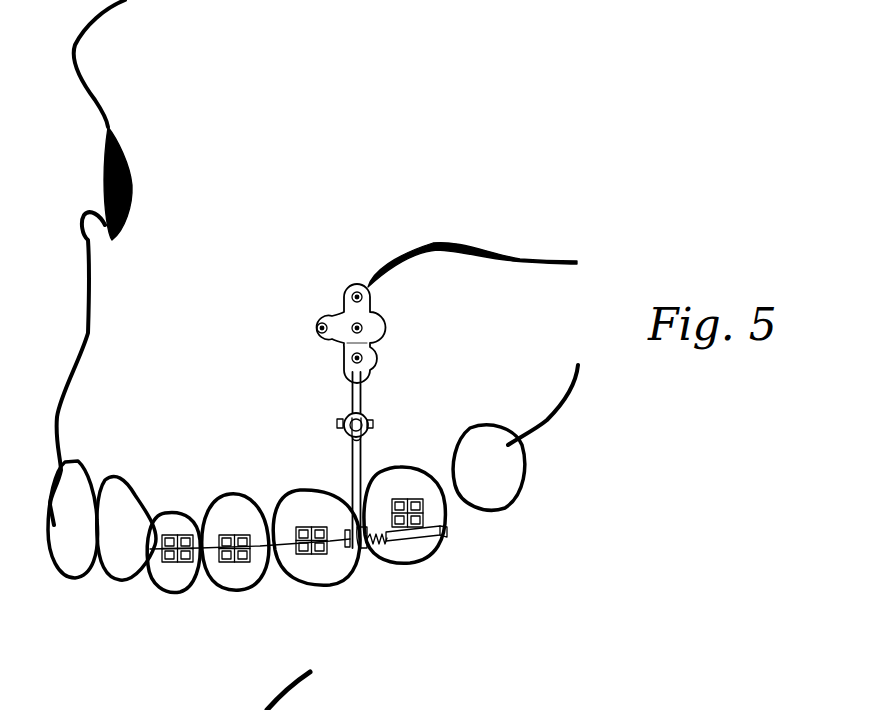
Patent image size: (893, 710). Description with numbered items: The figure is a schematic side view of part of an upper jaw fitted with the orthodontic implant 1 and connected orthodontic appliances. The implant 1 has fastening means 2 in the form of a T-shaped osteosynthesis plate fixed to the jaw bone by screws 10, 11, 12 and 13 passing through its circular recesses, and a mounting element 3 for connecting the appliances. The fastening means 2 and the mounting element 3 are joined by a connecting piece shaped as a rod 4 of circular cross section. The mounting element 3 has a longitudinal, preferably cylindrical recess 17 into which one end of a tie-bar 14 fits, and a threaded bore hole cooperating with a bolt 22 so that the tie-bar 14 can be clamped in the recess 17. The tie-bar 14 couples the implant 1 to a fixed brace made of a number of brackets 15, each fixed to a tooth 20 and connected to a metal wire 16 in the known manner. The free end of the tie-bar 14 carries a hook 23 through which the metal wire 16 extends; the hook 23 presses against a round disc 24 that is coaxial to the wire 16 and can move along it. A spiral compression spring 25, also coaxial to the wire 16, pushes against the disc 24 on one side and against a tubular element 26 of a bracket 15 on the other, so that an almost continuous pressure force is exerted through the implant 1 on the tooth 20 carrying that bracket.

The implant 1 is at (258, 343).
The fastening means 2 is at (345, 323).
The mounting element 3 is at (368, 433).
The rod 4 is at (350, 397).
The screw 10 is at (363, 356).
The screw 11 is at (362, 325).
The screw 12 is at (357, 290).
The screw 13 is at (314, 326).
The tie-bar 14 is at (352, 478).
The bracket 15 is at (168, 558).
The metal wire 16 is at (288, 546).
The recess 17 is at (361, 421).
The tooth 20 is at (420, 550).
The bolt 22 is at (343, 425).
The hook 23 is at (347, 548).
The round disc 24 is at (364, 550).
The spiral compression spring 25 is at (382, 541).
The tubular element 26 is at (447, 540).